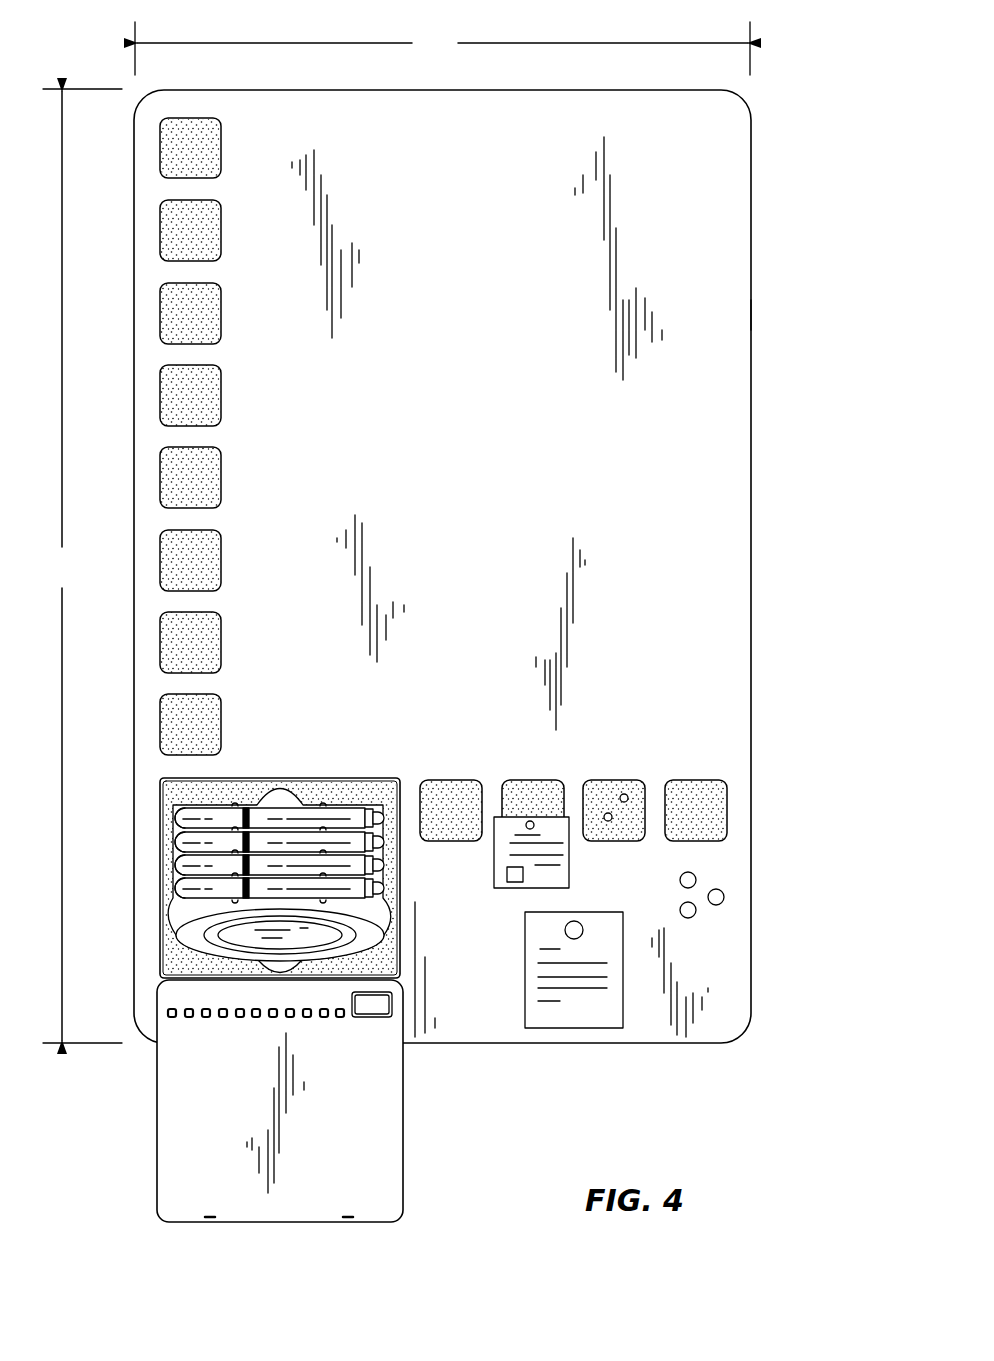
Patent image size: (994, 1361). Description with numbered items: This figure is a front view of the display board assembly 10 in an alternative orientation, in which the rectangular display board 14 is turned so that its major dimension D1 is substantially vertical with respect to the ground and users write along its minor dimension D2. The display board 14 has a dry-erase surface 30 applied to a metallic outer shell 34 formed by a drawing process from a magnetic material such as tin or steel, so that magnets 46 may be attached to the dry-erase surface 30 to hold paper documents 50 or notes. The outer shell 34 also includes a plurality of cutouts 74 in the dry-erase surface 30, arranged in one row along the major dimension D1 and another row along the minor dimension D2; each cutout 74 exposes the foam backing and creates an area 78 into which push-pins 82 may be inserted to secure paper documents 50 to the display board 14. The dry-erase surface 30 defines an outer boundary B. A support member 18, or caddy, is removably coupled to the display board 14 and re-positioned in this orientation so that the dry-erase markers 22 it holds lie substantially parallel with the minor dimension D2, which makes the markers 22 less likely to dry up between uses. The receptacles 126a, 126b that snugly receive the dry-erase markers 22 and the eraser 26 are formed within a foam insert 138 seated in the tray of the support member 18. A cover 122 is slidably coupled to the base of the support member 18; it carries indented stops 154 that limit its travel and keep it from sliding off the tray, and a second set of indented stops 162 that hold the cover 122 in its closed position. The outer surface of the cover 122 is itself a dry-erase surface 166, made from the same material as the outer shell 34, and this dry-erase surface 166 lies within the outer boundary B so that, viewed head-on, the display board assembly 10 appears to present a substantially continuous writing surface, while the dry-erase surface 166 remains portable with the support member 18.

The display board assembly 10 is at (786, 178).
The outer boundary B is at (751, 315).
The display board 14 is at (770, 378).
The metallic outer shell 34 is at (713, 445).
The dry-erase surface 30 is at (448, 400).
The cutouts 74 is at (222, 162).
The area 78 is at (198, 138).
The push-pins 82 is at (624, 794).
The paper documents 50 is at (532, 920).
The magnets 46 is at (580, 921).
The support member 18 is at (380, 765).
The foam insert 138 is at (325, 790).
The dry-erase markers 22 is at (383, 888).
The receptacles 126a is at (175, 888).
The receptacles 126b is at (195, 950).
The eraser 26 is at (372, 933).
The cover 122 is at (383, 1090).
The stops 154 is at (256, 1018).
The dry-erase surface 166 is at (307, 1125).
The stops 162 is at (209, 1215).
The major dimension D1 is at (82, 566).
The minor dimension D2 is at (442, 48).